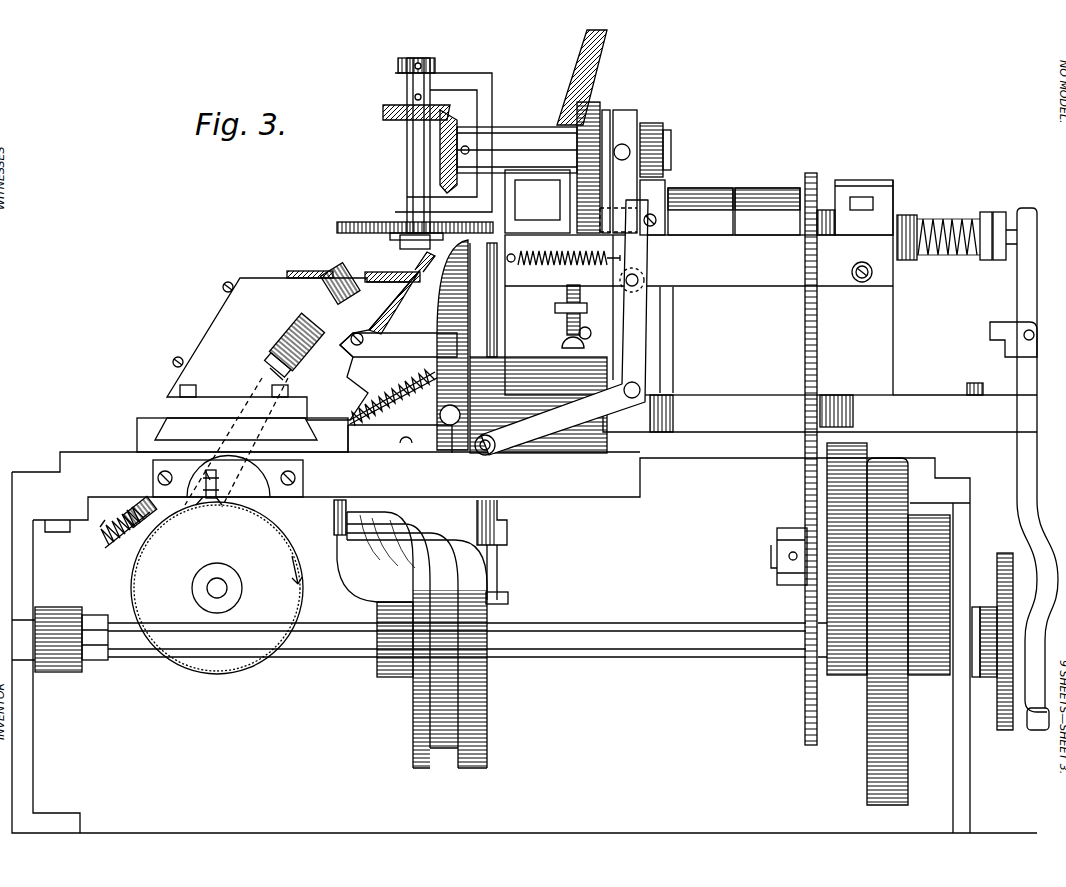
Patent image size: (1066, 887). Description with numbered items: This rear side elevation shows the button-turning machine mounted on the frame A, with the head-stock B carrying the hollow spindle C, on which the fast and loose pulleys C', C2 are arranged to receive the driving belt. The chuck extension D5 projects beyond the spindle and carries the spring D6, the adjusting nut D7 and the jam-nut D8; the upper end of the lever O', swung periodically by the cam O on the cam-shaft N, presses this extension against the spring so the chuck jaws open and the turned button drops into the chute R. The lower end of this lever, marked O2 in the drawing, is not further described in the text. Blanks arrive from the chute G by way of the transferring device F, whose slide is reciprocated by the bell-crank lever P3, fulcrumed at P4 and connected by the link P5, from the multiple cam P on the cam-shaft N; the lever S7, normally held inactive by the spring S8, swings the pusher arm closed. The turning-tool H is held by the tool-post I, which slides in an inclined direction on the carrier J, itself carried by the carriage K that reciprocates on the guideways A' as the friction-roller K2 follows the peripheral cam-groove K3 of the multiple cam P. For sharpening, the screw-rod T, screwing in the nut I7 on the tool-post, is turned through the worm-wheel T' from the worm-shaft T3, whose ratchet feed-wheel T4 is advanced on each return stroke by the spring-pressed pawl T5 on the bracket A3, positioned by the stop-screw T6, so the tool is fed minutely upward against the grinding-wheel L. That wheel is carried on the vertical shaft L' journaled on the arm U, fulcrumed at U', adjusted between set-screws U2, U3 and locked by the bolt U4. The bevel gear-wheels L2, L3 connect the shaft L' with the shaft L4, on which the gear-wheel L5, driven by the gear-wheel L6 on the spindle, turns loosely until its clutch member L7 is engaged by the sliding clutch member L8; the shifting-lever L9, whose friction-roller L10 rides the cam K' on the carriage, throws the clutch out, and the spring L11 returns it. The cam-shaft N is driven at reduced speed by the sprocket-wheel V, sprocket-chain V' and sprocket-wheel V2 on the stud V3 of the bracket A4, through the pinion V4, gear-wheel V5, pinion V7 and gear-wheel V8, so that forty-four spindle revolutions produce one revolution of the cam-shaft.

The frame A is at (524, 613).
The guideways A' is at (342, 475).
The bracket A3 is at (155, 468).
The bracket A4 is at (932, 553).
The head-stock B is at (656, 183).
The hollow spindle C is at (907, 223).
The fast pulley C' is at (700, 198).
The loose pulley C2 is at (770, 188).
The extension D5 is at (935, 219).
The spring D6 is at (965, 219).
The nut D7 is at (990, 212).
The jam-nut D8 is at (1002, 332).
The transferring device F is at (459, 345).
The chute G is at (582, 50).
The turning-tool H is at (400, 267).
The tool-post I is at (300, 271).
The nut I7 is at (284, 340).
The carrier J is at (288, 349).
The carriage K is at (228, 435).
The cam K' is at (400, 452).
The friction-roller K2 is at (335, 522).
The peripheral cam-groove K3 is at (413, 700).
The grinding-wheel L is at (415, 219).
The shaft L' is at (405, 153).
The bevel gear-wheel L2 is at (385, 108).
The bevel gear-wheel L3 is at (440, 132).
The shaft L4 is at (656, 142).
The gear-wheel L5 is at (593, 105).
The gear-wheel L6 is at (575, 221).
The clutch member L7 is at (607, 118).
The clutch member L8 is at (627, 120).
The shifting-lever L9 is at (636, 352).
The friction-roller L10 is at (483, 456).
The spring L11 is at (537, 267).
The cam-shaft N is at (658, 645).
The cam O is at (992, 654).
The lever O' is at (1039, 460).
The handle O2 is at (1036, 730).
The multiple cam P is at (487, 706).
The bell-crank lever P3 is at (498, 570).
The fulcrum P4 is at (507, 536).
The link P5 is at (508, 597).
The chute R is at (538, 348).
The bracket R' is at (398, 345).
The lever S7 is at (400, 314).
The spring S8 is at (393, 404).
The screw-rod T is at (256, 380).
The worm-wheel T' is at (116, 526).
The worm-shaft T3 is at (215, 592).
The ratchet feed-wheel T4 is at (208, 666).
The spring-pressed pawl T5 is at (218, 502).
The stop-screw T6 is at (211, 458).
The arm U is at (644, 252).
The fulcrum U' is at (862, 288).
The set-screw U2 is at (567, 320).
The set-screw U3 is at (652, 227).
The bolt U4 is at (645, 280).
The sprocket-wheel V is at (820, 448).
The sprocket-chain V' is at (787, 331).
The sprocket-wheel V2 is at (805, 604).
The stud V3 is at (777, 556).
The pinion V4 is at (840, 540).
The gear-wheel V5 is at (868, 455).
The pinion V7 is at (900, 505).
The gear-wheel V8 is at (868, 768).